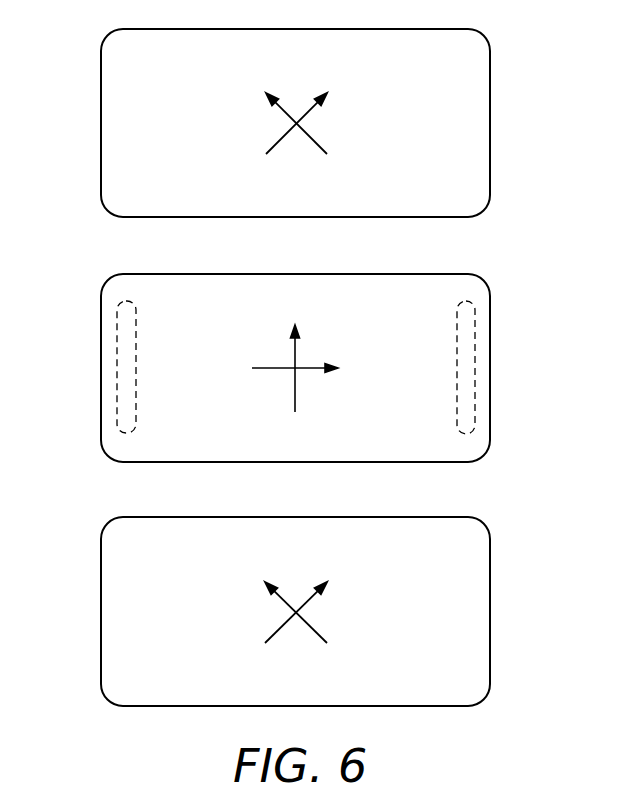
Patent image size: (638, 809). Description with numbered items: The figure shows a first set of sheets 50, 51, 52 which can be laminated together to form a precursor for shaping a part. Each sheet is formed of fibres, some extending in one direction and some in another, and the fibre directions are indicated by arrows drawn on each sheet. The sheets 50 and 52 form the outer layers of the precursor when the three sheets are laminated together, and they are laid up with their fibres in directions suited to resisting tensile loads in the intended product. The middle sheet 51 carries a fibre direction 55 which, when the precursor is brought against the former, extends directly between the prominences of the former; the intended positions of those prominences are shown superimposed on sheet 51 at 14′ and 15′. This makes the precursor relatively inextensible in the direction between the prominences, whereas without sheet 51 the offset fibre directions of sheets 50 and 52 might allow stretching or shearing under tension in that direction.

The sheet 50 is at (490, 49).
The sheet 51 is at (490, 292).
The sheet 52 is at (490, 539).
The fibre direction 55 is at (320, 366).
The intended position of prominence 14′ is at (117, 358).
The intended position of prominence 15′ is at (475, 357).